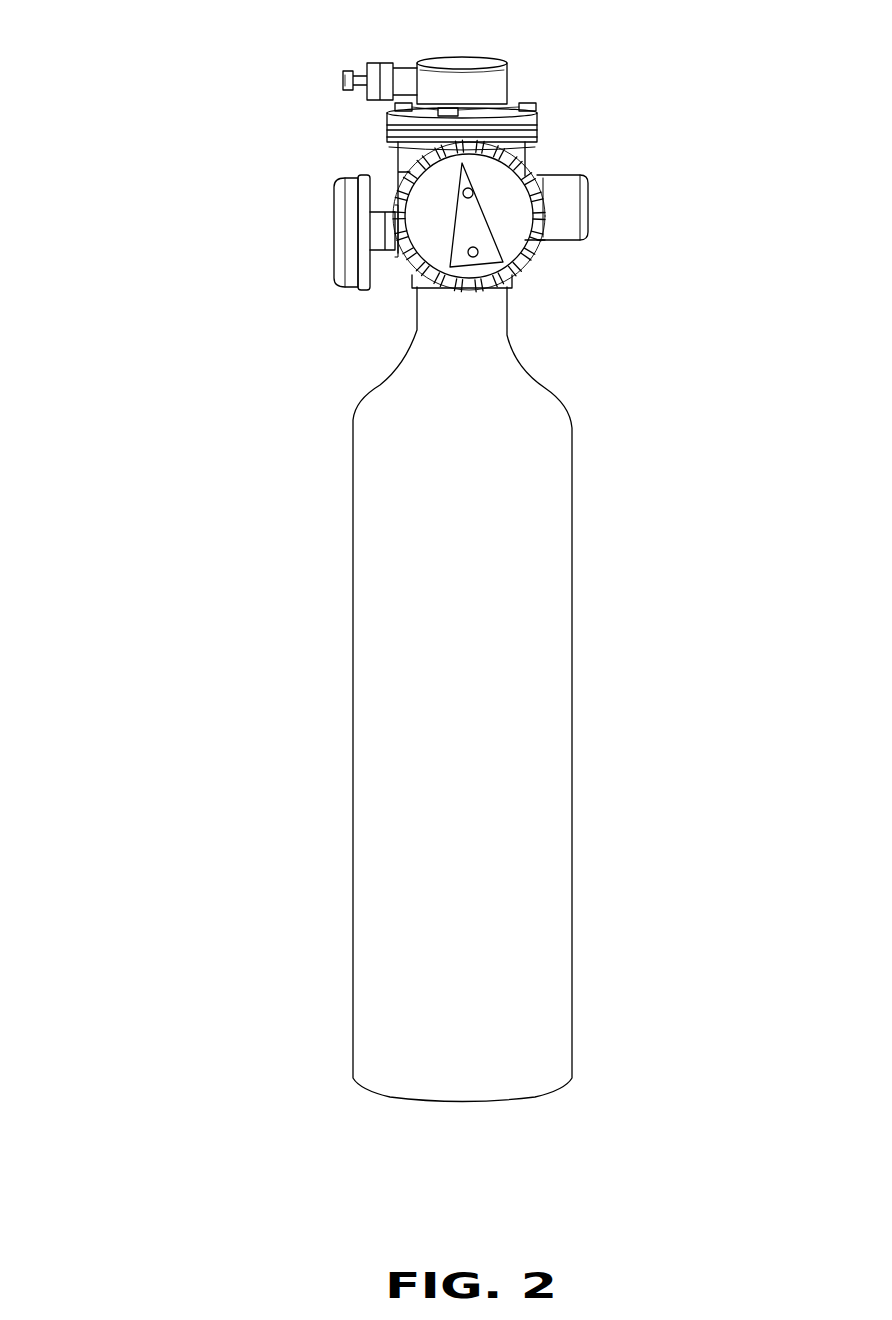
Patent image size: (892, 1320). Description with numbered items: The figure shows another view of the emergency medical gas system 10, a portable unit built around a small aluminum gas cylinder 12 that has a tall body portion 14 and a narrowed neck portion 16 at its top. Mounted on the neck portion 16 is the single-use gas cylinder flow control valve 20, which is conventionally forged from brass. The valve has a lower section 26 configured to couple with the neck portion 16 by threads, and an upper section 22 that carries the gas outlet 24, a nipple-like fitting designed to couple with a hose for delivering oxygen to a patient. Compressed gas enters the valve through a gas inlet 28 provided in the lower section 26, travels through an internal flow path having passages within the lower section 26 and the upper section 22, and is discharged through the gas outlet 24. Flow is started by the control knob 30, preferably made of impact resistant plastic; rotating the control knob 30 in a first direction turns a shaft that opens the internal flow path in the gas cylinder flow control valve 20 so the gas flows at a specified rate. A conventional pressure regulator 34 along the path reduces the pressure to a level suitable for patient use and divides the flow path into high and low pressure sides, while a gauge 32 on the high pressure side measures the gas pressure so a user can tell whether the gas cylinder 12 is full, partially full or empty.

The emergency medical gas system 10 is at (270, 40).
The gas cylinder 12 is at (255, 622).
The body portion 14 is at (564, 731).
The neck portion 16 is at (498, 317).
The gas cylinder flow control valve 20 is at (260, 172).
The upper section 22 is at (500, 82).
The gas outlet 24 is at (358, 72).
The lower section 26 is at (398, 213).
The gas inlet 28 is at (408, 283).
The control knob 30 is at (510, 237).
The gauge 32 is at (342, 278).
The pressure regulator 34 is at (555, 160).